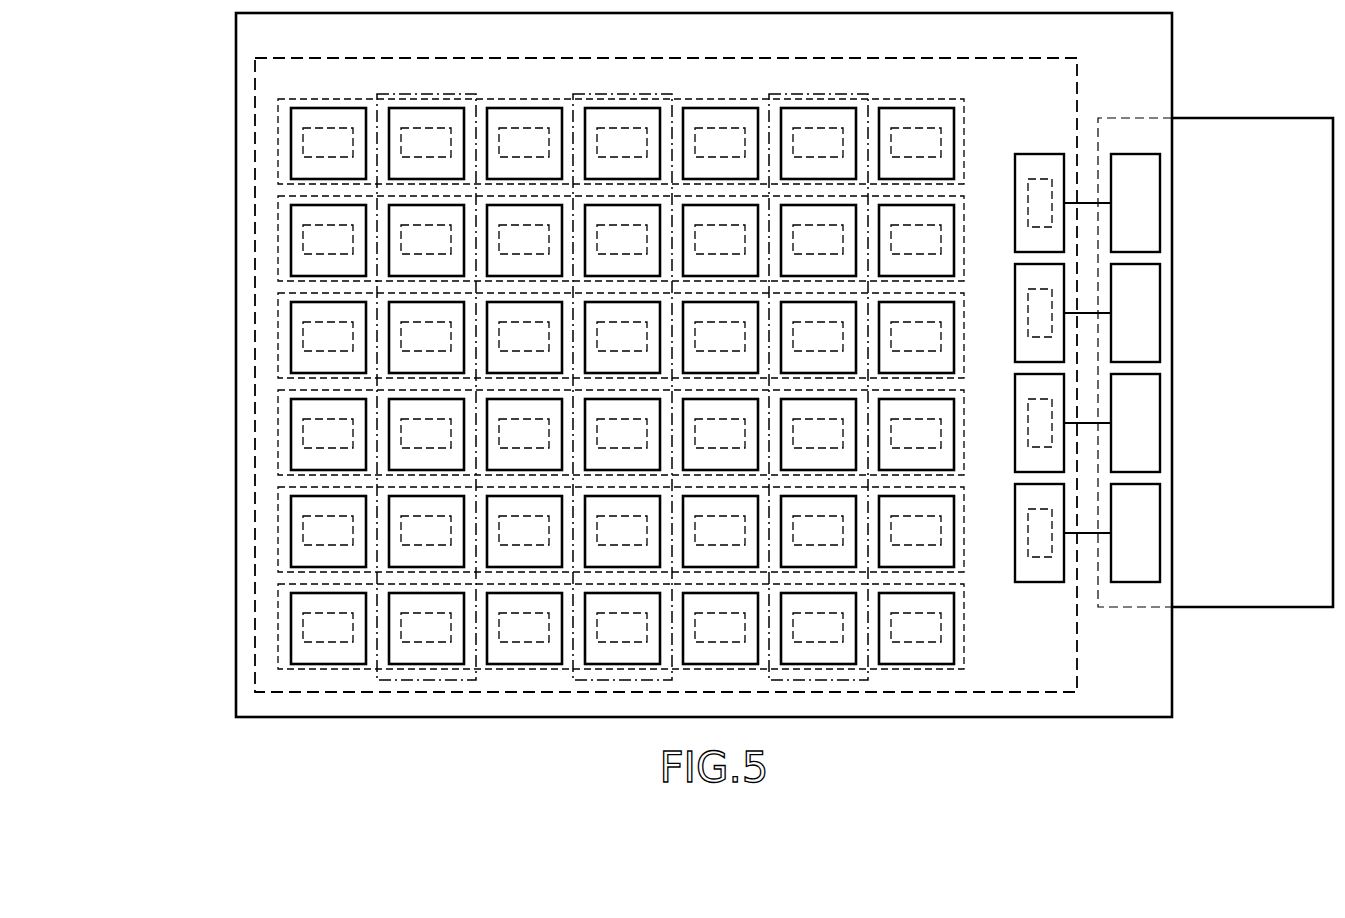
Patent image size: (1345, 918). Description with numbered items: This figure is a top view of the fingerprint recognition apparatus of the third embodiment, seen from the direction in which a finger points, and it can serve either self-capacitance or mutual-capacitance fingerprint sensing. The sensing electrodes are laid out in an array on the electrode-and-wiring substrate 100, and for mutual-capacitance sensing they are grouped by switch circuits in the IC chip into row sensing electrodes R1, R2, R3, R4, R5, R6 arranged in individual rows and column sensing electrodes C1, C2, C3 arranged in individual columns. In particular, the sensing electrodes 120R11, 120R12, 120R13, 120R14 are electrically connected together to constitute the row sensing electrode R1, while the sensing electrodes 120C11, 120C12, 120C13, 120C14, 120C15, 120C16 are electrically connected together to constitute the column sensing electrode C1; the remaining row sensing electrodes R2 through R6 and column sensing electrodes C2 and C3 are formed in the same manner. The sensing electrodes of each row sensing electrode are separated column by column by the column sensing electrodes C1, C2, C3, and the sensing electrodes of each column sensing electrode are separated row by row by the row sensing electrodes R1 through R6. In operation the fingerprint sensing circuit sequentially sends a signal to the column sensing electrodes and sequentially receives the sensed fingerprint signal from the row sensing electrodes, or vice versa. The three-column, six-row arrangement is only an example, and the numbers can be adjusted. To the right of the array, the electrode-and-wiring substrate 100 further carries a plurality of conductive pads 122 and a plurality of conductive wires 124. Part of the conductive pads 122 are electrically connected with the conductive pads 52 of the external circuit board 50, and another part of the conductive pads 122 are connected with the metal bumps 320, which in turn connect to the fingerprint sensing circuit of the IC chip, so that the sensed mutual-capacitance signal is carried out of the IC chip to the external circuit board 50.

The electrode-and-wiring substrate 100 is at (1147, 672).
The external circuit board 50 is at (1266, 134).
The conductive pads of the external circuit board 52 is at (1153, 188).
The conductive pads 122 is at (1037, 165).
The conductive wires 124 is at (1087, 202).
The metal bumps 320 is at (926, 135).
The sensing electrode 120R11 is at (323, 117).
The sensing electrode 120R12 is at (526, 117).
The sensing electrode 120R13 is at (723, 117).
The sensing electrode 120R14 is at (901, 117).
The sensing electrode 120C11 is at (402, 171).
The sensing electrode 120C12 is at (402, 268).
The sensing electrode 120C13 is at (402, 365).
The sensing electrode 120C14 is at (402, 462).
The sensing electrode 120C15 is at (402, 559).
The sensing electrode 120C16 is at (402, 656).
The row sensing electrode R1 is at (639, 141).
The row sensing electrode R2 is at (639, 238).
The row sensing electrode R3 is at (639, 335).
The row sensing electrode R4 is at (639, 432).
The row sensing electrode R5 is at (639, 529).
The row sensing electrode R6 is at (639, 626).
The column sensing electrode C1 is at (426, 373).
The column sensing electrode C2 is at (622, 373).
The column sensing electrode C3 is at (818, 373).